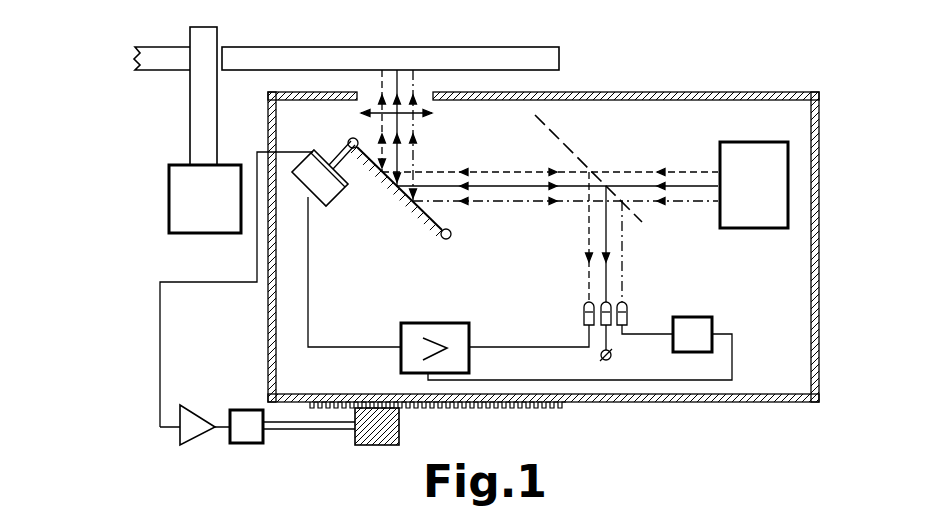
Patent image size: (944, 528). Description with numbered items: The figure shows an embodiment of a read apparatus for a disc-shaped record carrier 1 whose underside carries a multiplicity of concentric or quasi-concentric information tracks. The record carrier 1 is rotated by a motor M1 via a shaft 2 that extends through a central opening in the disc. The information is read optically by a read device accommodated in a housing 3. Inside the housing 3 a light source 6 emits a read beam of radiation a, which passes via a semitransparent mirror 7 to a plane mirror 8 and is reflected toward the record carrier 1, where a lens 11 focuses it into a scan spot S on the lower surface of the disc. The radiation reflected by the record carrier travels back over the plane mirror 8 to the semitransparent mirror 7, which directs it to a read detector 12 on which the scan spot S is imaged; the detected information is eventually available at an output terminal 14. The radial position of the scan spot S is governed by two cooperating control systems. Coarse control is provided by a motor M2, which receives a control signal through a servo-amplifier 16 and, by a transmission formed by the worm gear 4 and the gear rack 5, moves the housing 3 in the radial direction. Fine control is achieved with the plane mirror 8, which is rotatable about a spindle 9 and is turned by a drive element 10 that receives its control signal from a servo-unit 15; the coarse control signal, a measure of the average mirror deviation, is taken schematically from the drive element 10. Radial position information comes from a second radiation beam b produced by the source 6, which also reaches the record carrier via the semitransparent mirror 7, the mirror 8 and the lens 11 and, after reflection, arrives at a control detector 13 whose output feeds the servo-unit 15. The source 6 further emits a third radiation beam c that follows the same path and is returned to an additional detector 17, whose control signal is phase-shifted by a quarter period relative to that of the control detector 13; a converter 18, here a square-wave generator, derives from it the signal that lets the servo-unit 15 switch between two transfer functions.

The record carrier 1 is at (270, 55).
The shaft 2 is at (208, 40).
The housing 3 is at (742, 92).
The worm gear 4 is at (399, 431).
The gear rack 5 is at (476, 410).
The light source 6 is at (760, 151).
The semitransparent mirror 7 is at (573, 152).
The plane mirror 8 is at (413, 222).
The spindle 9 is at (443, 239).
The drive element 10 is at (330, 258).
The lens 11 is at (422, 114).
The read detector 12 is at (601, 320).
The control detector 13 is at (585, 313).
The output terminal 14 is at (612, 357).
The servo-unit 15 is at (470, 333).
The servo-amplifier 16 is at (196, 427).
The additional detector 17 is at (627, 315).
The converter 18 is at (703, 320).
The scan spot S is at (398, 70).
The motor M1 is at (205, 232).
The motor M2 is at (240, 380).
The read beam of radiation a is at (399, 152).
The radiation beam b is at (380, 147).
The third radiation beam c is at (413, 163).